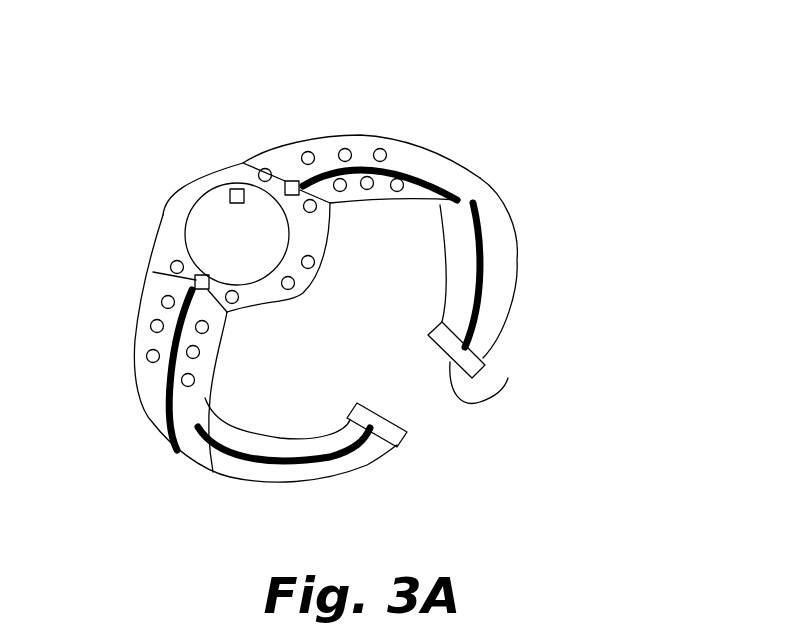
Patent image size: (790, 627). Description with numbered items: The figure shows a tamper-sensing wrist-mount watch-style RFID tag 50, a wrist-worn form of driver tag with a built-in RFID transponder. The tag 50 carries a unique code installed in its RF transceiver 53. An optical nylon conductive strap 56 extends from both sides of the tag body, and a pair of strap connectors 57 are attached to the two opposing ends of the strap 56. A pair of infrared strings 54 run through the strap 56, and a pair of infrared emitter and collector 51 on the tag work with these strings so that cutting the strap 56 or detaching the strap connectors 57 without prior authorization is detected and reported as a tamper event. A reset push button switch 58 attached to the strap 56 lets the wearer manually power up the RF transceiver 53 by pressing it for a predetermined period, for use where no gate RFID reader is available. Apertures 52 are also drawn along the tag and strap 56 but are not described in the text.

The tamper-sensing wrist-mount watch-style RFID tag 50 is at (602, 147).
The infrared emitter and collector 51 is at (290, 181).
The apertures 52 is at (172, 262).
The RF transceiver 53 is at (240, 189).
The infrared strings 54 is at (422, 172).
The optical nylon conductive strap 56 is at (517, 287).
The strap connectors 57 is at (438, 384).
The reset push button switch 58 is at (315, 262).